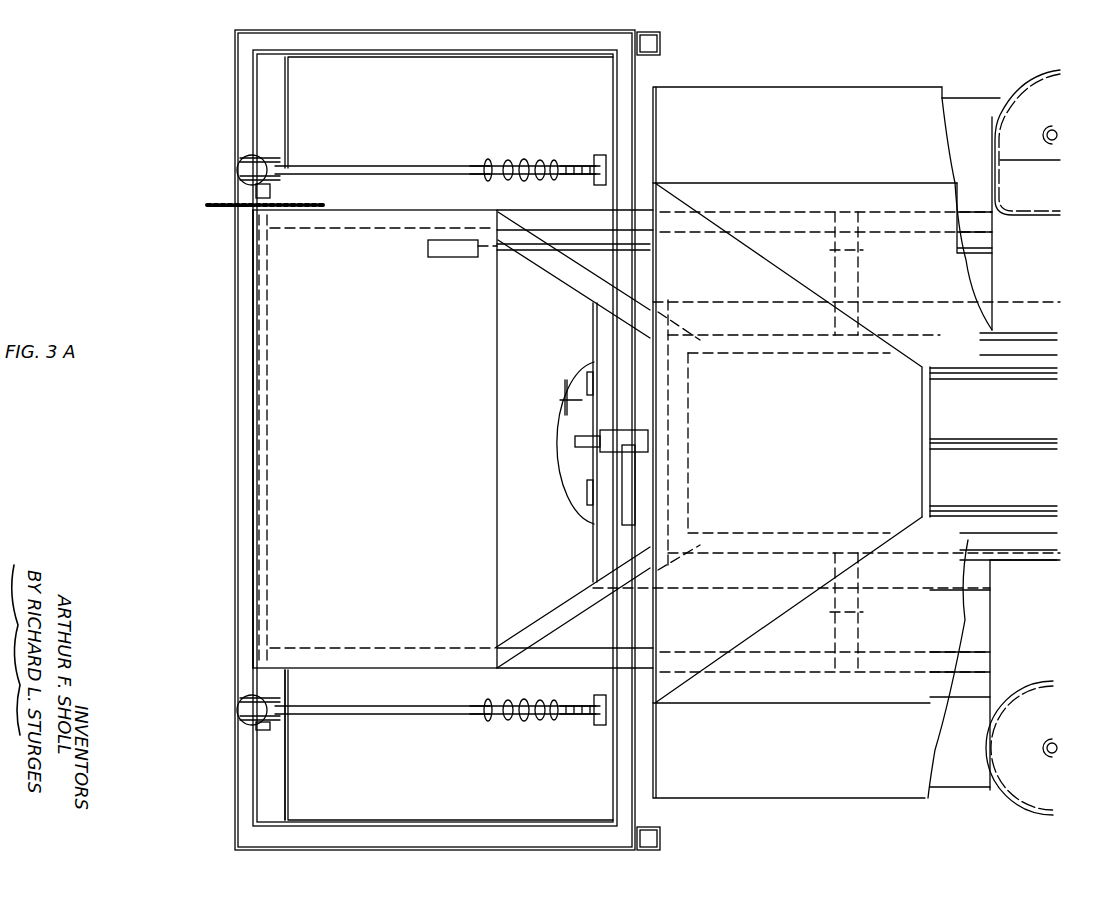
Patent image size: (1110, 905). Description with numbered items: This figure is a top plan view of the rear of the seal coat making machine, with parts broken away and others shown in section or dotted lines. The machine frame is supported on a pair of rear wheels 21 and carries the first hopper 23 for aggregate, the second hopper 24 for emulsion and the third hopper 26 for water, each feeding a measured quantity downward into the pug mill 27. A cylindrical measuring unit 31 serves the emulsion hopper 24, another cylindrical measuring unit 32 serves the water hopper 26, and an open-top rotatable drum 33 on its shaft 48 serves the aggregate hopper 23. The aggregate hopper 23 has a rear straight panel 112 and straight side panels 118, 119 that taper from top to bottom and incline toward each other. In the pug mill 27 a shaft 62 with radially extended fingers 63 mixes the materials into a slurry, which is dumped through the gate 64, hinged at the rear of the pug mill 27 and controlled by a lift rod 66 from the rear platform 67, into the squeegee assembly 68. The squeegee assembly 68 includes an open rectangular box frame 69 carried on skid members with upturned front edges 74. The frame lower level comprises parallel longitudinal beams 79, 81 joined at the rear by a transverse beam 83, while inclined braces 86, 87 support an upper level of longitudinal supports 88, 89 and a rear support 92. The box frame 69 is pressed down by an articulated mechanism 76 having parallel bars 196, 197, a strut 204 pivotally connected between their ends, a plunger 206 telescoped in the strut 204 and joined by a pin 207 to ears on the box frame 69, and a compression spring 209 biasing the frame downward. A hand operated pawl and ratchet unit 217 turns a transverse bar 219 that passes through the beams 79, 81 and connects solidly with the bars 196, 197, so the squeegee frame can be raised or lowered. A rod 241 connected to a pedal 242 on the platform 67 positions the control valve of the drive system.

The rear wheels 21 is at (970, 100).
The first hopper 23 is at (822, 700).
The second hopper 24 is at (1045, 634).
The third hopper 26 is at (1040, 286).
The pug mill 27 is at (592, 546).
The cylindrical measuring unit 31 is at (1022, 810).
The cylindrical measuring unit 32 is at (1000, 90).
The rotatable drum 33 is at (1040, 492).
The shaft 48 is at (1040, 440).
The shaft 62 is at (616, 434).
The fingers 63 is at (628, 516).
The gate 64 is at (558, 476).
The lift rod 66 is at (566, 396).
The rear platform 67 is at (272, 538).
The squeegee assembly 68 is at (228, 772).
The box frame 69 is at (290, 782).
The upturned front edges 74 is at (662, 46).
The articulated mechanism 76 is at (226, 146).
The longitudinal beam 79 is at (583, 215).
The longitudinal beam 81 is at (592, 660).
The transverse beam 83 is at (270, 382).
The inclined braces 86 is at (852, 292).
The inclined braces 87 is at (540, 256).
The longitudinal support 88 is at (1045, 346).
The longitudinal support 89 is at (815, 532).
The rear support 92 is at (680, 440).
The rear straight panel 112 is at (712, 240).
The side panel 118 is at (810, 195).
The side panel 119 is at (752, 700).
The bar 196 is at (228, 162).
The bar 197 is at (236, 183).
The strut 204 is at (407, 158).
The plunger 206 is at (492, 162).
The pin 207 is at (600, 156).
The compression spring 209 is at (530, 162).
The pawl and ratchet unit 217 is at (216, 224).
The bar 219 is at (258, 463).
The rod 241 is at (655, 245).
The pedal 242 is at (440, 256).